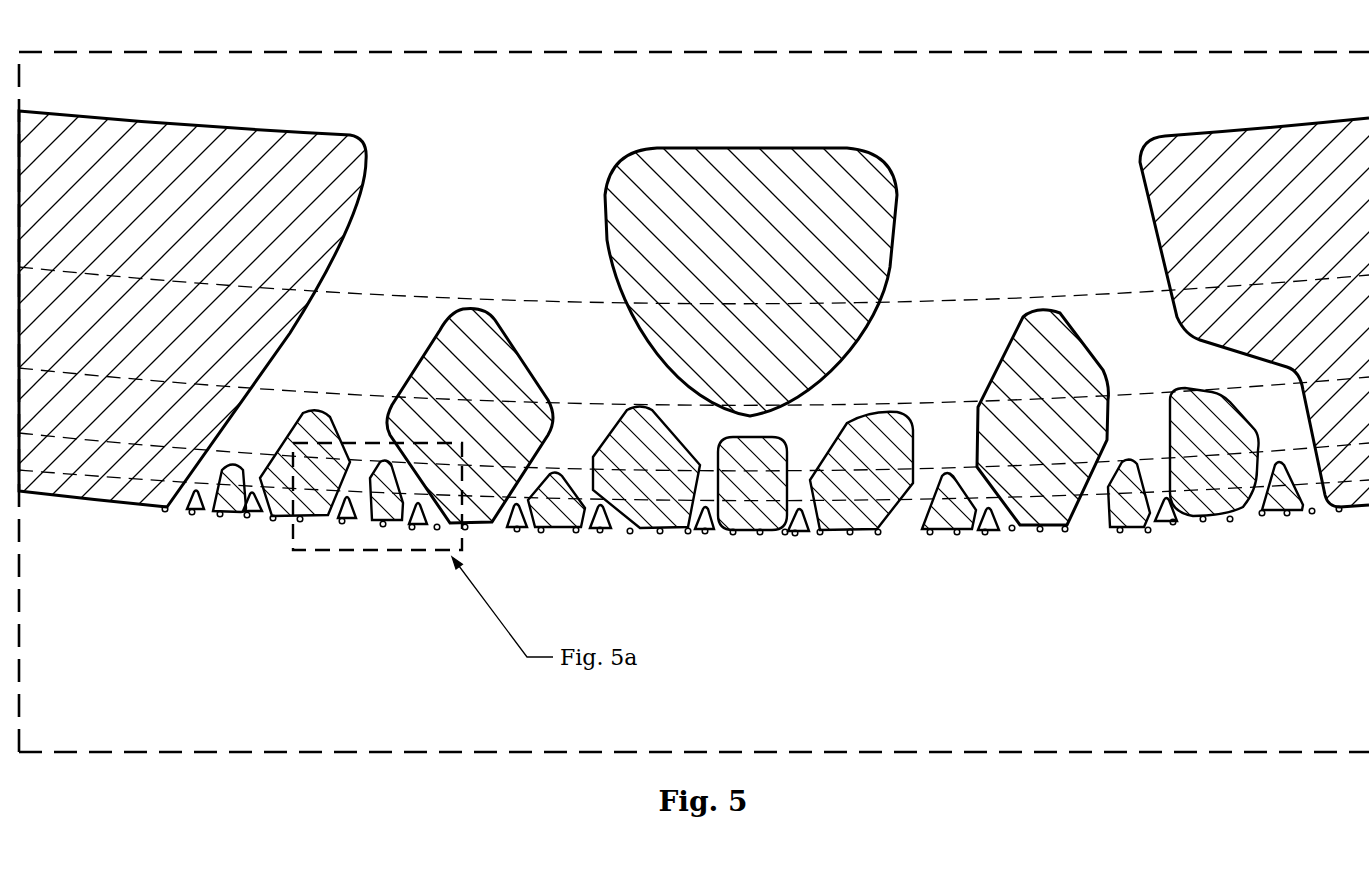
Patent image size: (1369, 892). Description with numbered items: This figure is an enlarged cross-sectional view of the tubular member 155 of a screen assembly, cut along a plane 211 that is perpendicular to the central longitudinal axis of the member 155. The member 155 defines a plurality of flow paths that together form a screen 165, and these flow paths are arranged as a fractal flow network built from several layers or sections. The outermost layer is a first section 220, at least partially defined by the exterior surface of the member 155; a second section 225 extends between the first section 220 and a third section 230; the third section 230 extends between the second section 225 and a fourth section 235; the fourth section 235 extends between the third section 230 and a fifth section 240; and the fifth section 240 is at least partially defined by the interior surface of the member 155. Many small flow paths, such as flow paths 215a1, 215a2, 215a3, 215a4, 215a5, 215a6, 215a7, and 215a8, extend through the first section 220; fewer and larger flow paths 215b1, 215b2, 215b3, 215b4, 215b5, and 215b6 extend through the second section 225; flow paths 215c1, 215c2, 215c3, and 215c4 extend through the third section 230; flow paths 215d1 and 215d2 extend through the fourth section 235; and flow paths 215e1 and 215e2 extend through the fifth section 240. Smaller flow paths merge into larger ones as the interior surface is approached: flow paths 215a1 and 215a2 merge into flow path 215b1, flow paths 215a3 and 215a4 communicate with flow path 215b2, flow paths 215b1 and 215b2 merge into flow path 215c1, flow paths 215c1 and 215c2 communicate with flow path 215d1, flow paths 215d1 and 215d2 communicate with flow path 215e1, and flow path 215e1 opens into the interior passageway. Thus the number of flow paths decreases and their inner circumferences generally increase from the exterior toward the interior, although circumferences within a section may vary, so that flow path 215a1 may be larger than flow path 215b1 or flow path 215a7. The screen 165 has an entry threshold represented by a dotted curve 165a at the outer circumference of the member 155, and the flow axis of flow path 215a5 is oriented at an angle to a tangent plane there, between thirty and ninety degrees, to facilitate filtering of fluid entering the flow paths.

The fifth section 240 is at (160, 160).
The member 155 is at (262, 140).
The screen 165 is at (750, 130).
The entry threshold 165a is at (1314, 518).
The fourth section 235 is at (120, 328).
The third section 230 is at (95, 390).
The second section 225 is at (75, 452).
The first section 220 is at (66, 498).
The plane 211 is at (893, 605).
The flow path 215a1 is at (172, 513).
The flow path 215a2 is at (205, 520).
The flow path 215a3 is at (225, 520).
The flow path 215a4 is at (260, 522).
The flow path 215a5 is at (340, 522).
The flow path 215a6 is at (375, 526).
The flow path 215a7 is at (403, 528).
The flow path 215a8 is at (492, 536).
The flow path 215b1 is at (208, 468).
The flow path 215b2 is at (260, 455).
The flow path 215b3 is at (365, 460).
The flow path 215b4 is at (415, 478).
The flow path 215b5 is at (545, 512).
The medium protrusion 215b6 is at (608, 500).
The flow path 215c1 is at (262, 405).
The flow path 215c2 is at (392, 400).
The flow path 215c3 is at (575, 425).
The flow path 215c4 is at (690, 425).
The flow path 215d1 is at (370, 318).
The flow path 215d2 is at (565, 318).
The flow path 215e1 is at (506, 224).
The flow path 215e2 is at (1066, 240).